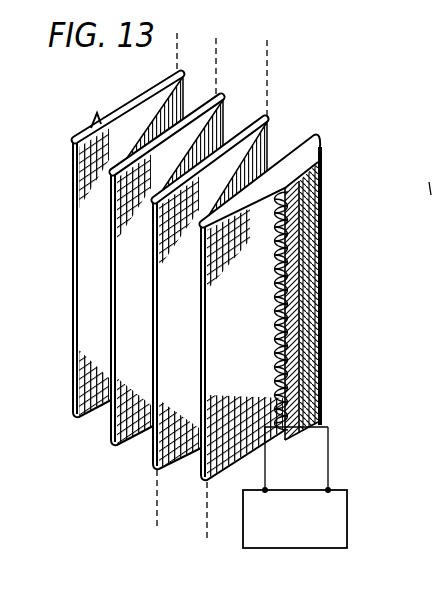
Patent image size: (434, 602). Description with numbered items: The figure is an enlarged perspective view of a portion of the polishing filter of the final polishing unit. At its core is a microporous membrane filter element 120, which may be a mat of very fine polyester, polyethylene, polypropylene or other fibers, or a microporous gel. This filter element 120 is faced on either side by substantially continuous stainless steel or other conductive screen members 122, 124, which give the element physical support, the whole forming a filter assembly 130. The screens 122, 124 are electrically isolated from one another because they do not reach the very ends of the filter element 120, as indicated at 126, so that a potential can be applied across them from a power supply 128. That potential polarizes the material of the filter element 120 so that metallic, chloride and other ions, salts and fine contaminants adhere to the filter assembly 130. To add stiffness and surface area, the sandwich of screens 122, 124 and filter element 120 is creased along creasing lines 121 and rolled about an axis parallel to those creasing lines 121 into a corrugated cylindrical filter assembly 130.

The microporous membrane filter element 120 is at (316, 140).
The creasing lines 121 is at (177, 34).
The conductive screen member 122 is at (322, 219).
The conductive screen member 124 is at (281, 306).
The electrically isolated screen ends 126 is at (323, 163).
The power supply 128 is at (349, 497).
The filter assembly 130 is at (107, 460).